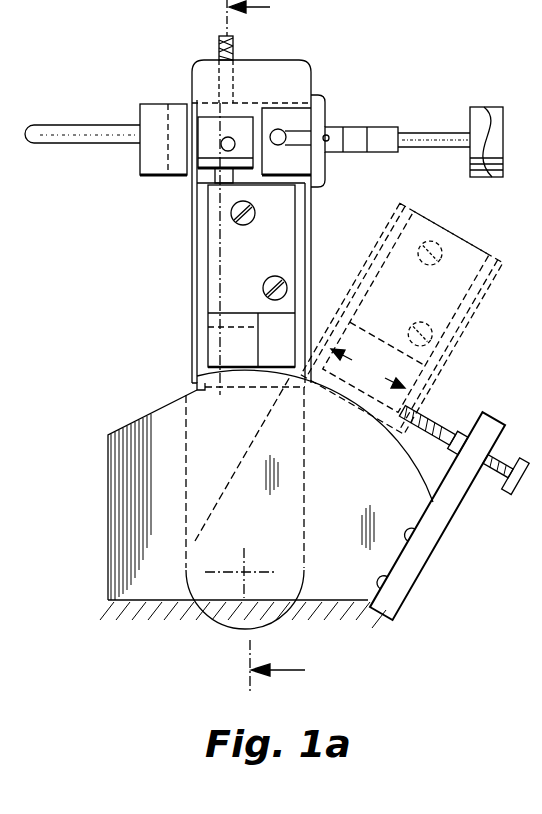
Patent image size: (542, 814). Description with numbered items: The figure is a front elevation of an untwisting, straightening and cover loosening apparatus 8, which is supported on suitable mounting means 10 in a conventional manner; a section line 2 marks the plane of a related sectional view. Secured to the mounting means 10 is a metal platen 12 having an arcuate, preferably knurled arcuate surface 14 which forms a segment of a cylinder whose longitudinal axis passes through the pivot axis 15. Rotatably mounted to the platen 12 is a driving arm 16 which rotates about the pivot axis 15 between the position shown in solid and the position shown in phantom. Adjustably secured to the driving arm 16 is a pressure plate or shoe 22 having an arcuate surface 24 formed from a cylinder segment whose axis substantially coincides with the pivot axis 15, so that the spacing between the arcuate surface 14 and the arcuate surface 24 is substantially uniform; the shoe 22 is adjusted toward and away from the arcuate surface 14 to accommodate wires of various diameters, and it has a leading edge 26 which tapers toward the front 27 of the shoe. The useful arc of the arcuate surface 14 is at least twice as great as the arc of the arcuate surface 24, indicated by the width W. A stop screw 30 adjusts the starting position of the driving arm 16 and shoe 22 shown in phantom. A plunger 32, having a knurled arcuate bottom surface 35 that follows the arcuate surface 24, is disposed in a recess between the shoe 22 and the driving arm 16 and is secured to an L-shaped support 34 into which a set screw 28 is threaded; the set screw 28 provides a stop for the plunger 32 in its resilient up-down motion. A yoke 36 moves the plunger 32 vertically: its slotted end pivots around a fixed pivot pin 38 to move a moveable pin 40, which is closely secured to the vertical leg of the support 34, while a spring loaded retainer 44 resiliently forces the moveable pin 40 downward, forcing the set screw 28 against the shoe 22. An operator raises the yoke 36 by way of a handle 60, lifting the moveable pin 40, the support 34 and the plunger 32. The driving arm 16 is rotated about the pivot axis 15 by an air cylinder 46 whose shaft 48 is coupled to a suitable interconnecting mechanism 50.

The apparatus 8 is at (181, 289).
The section line 2- 2 is at (277, 346).
The mounting means 10 is at (131, 608).
The platen 12 is at (121, 442).
The arcuate surface 14 is at (311, 372).
The pivot axis 15 is at (245, 566).
The driving arm 16 is at (307, 62).
The shoe 22 is at (283, 248).
The arcuate surface 24 is at (232, 372).
The leading edge 26 is at (227, 332).
The front 27 is at (284, 347).
The set screw 28 is at (225, 176).
The stop screw 30 is at (437, 396).
The plunger 32 is at (200, 235).
The L-shaped support 34 is at (207, 127).
The arcuate bottom surface 35 is at (195, 383).
The yoke 36 is at (142, 119).
The pivot pin 38 is at (282, 137).
The moveable pin 40 is at (230, 142).
The spring loaded retainer 44 is at (233, 46).
The air cylinder 46 is at (483, 110).
The shaft 48 is at (424, 136).
The interconnecting mechanism 50 is at (332, 167).
The handle 60 is at (77, 137).